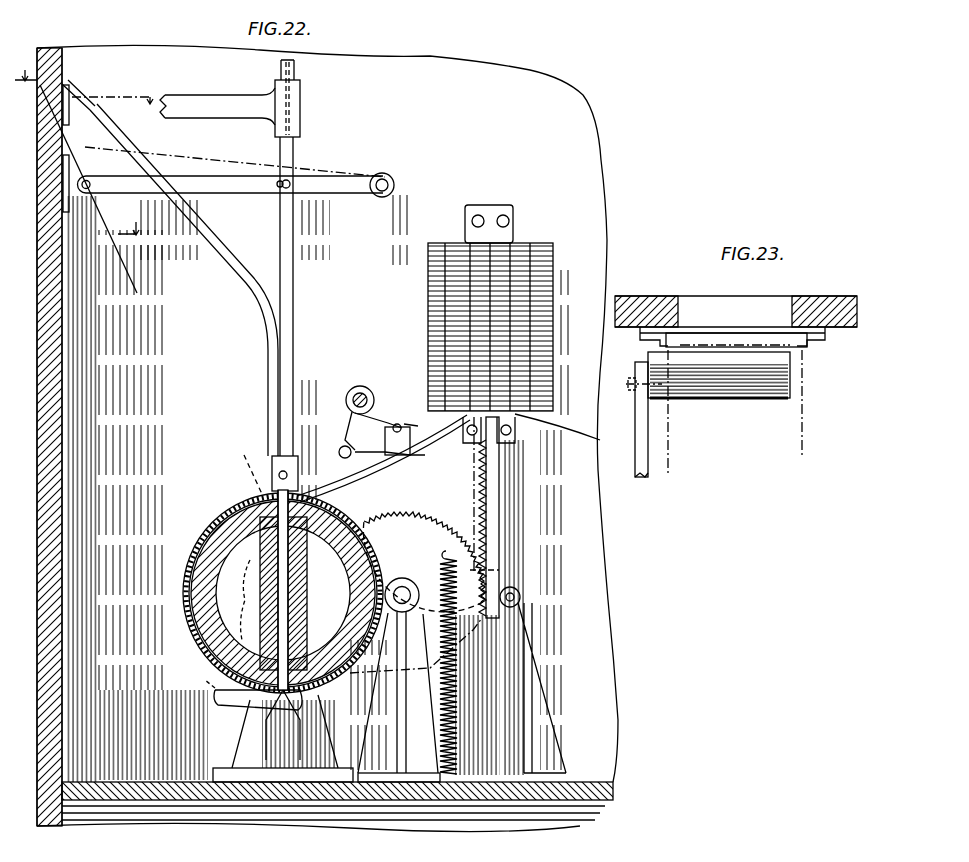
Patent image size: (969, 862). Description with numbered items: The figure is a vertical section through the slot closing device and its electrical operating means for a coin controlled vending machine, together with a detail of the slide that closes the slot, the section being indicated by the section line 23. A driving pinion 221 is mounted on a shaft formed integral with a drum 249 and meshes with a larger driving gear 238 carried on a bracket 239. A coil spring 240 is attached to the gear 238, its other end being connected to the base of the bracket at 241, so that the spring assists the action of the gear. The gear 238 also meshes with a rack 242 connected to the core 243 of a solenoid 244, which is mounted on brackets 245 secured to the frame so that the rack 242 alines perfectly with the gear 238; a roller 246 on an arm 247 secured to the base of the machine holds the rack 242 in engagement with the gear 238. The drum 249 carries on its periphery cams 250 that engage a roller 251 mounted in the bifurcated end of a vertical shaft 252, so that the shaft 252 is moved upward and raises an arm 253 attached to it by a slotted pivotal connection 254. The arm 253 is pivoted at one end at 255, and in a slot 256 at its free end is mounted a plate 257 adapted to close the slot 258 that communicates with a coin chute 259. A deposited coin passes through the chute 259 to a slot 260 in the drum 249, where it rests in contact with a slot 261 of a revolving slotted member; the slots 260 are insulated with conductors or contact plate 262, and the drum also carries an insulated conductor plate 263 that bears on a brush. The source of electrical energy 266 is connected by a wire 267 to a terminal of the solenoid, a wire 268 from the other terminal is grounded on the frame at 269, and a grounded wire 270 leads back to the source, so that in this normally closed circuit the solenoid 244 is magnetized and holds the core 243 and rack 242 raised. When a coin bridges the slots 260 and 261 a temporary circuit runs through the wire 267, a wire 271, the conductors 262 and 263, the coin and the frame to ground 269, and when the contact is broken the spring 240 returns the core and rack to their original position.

The section line 23 is at (91, 143).
The driving pinion 221 is at (337, 633).
The driving gear 238 is at (415, 525).
The bracket 239 is at (402, 782).
The coil spring 240 is at (425, 556).
The spring connection to bracket base 241 is at (450, 778).
The rack 242 is at (493, 520).
The core 243 is at (576, 436).
The solenoid 244 is at (553, 287).
The brackets 245 is at (510, 221).
The roller 246 is at (520, 592).
The arm 247 is at (524, 660).
The drum 249 is at (218, 525).
The cams 250 is at (262, 745).
The roller 251 is at (300, 470).
The vertical shaft 252 is at (293, 325).
The arm 253 is at (331, 200).
The slotted pivotal connection 254 is at (290, 180).
The pivot 255 is at (393, 183).
The slot 256 is at (80, 150).
The plate 257 is at (103, 206).
The slot 258 is at (74, 88).
The coin chute 259 is at (220, 255).
The slot 260 is at (270, 492).
The slot 261 is at (288, 582).
The conductors or contact plate 262 is at (355, 515).
The insulated conductor plate 263 is at (246, 514).
The source of electrical energy 266 is at (367, 387).
The wire 267 is at (396, 420).
The wire 268 is at (418, 456).
The ground 269 is at (340, 449).
The wire 270 is at (355, 422).
The wire 271 is at (429, 433).